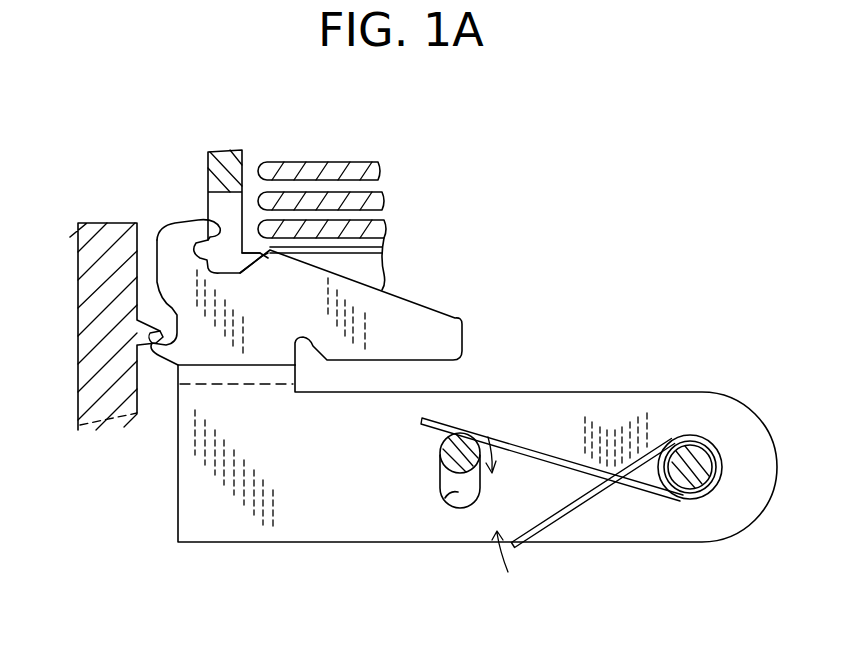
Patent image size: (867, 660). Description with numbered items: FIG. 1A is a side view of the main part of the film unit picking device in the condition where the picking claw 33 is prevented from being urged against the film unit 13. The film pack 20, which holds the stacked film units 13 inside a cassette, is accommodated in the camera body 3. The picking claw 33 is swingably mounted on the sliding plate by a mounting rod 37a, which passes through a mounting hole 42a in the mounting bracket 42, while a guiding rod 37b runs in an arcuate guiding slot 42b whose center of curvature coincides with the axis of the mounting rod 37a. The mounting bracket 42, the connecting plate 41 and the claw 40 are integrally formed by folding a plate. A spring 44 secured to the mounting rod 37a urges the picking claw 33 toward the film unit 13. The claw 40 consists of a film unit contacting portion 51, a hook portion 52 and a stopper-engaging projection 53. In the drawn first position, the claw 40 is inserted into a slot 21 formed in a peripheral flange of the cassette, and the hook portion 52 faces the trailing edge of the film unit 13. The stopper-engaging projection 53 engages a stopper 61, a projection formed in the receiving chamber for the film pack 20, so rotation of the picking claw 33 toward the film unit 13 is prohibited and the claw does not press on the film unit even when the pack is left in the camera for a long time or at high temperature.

The camera body 3 is at (90, 360).
The film unit 13 is at (353, 170).
The film pack 20 is at (206, 156).
The slot 21 is at (371, 270).
The picking claw 33 is at (400, 543).
The mounting rod 37a is at (690, 484).
The guiding rod 37b is at (450, 460).
The claw 40 is at (410, 328).
The connecting plate 41 is at (268, 373).
The mounting bracket 42 is at (503, 405).
The mounting hole 42a is at (698, 440).
The guiding slot 42b is at (442, 492).
The spring 44 is at (563, 514).
The film unit contacting portion 51 is at (268, 254).
The hook portion 52 is at (210, 230).
The stopper-engaging projection 53 is at (172, 352).
The stopper 61 is at (148, 354).